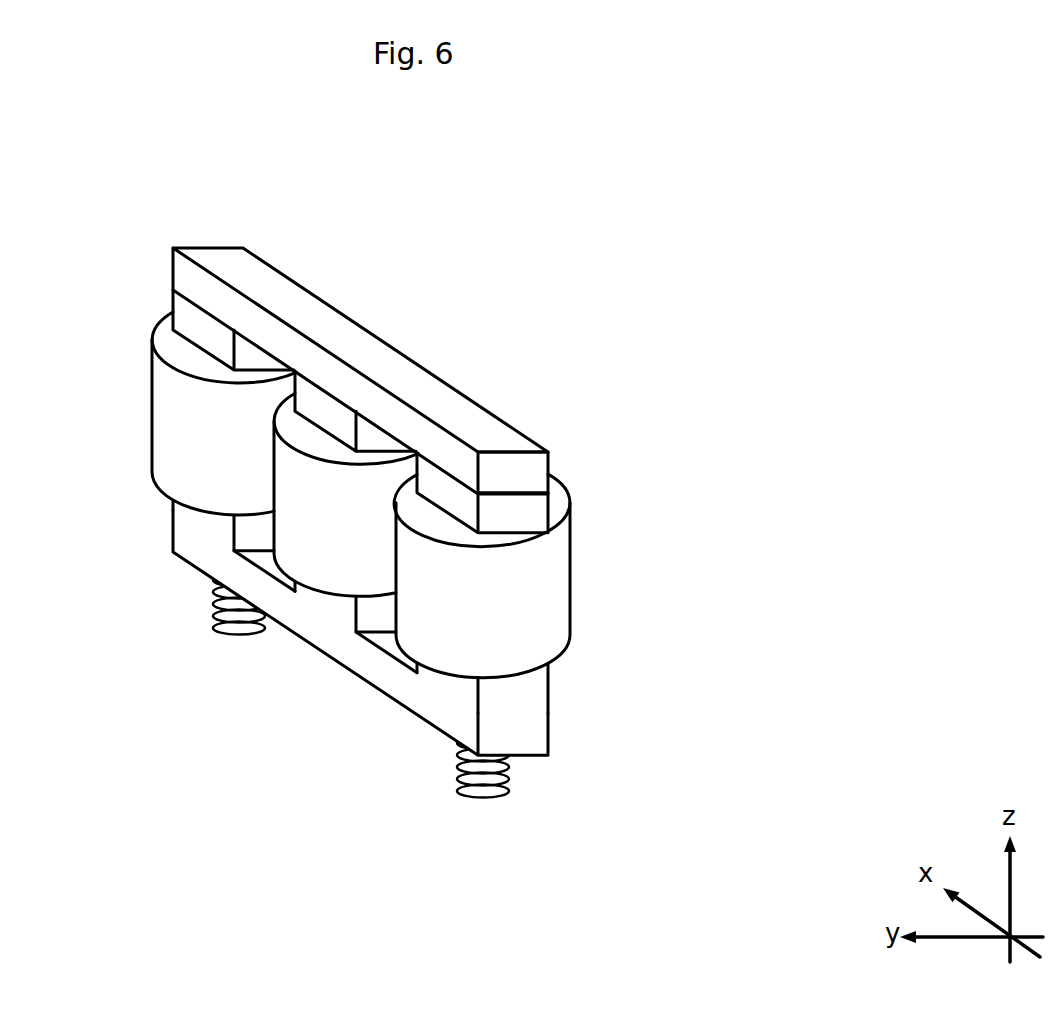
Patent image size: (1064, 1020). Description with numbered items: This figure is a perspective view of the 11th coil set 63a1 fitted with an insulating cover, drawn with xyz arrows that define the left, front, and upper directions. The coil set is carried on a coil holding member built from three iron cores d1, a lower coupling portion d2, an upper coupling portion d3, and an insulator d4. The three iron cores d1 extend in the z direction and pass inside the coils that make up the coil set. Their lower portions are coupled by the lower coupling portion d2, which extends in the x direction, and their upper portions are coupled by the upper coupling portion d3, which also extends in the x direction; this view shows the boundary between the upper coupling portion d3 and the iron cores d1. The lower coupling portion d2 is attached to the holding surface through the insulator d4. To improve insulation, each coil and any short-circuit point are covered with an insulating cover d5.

The 11th coil set 63a1 is at (497, 214).
The iron core d1 is at (226, 350).
The lower coupling portion d2 is at (427, 708).
The upper coupling portion d3 is at (335, 330).
The insulator d4 is at (233, 632).
The insulating cover d5 is at (163, 470).